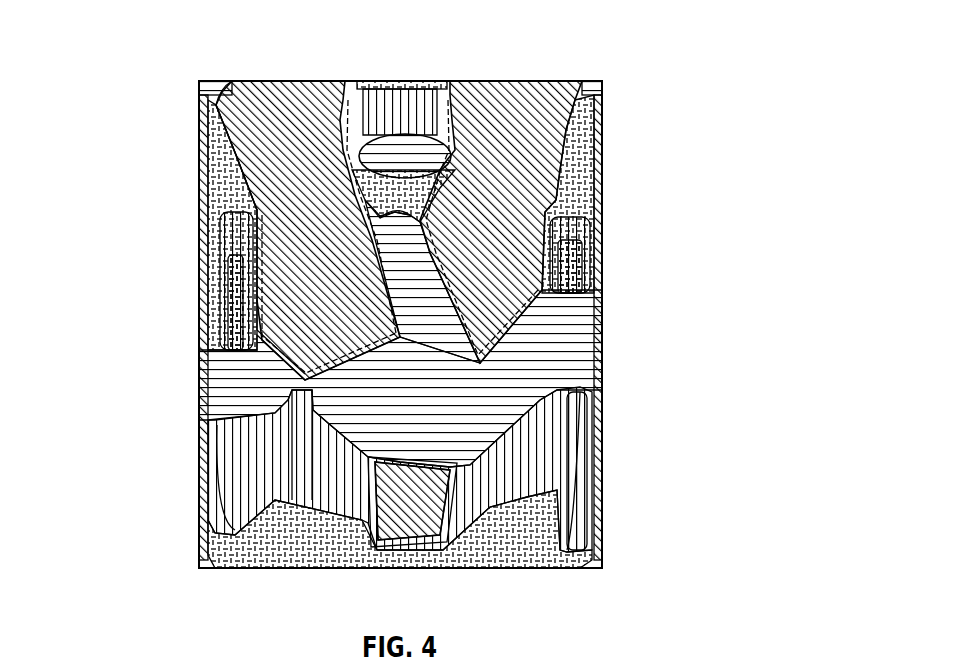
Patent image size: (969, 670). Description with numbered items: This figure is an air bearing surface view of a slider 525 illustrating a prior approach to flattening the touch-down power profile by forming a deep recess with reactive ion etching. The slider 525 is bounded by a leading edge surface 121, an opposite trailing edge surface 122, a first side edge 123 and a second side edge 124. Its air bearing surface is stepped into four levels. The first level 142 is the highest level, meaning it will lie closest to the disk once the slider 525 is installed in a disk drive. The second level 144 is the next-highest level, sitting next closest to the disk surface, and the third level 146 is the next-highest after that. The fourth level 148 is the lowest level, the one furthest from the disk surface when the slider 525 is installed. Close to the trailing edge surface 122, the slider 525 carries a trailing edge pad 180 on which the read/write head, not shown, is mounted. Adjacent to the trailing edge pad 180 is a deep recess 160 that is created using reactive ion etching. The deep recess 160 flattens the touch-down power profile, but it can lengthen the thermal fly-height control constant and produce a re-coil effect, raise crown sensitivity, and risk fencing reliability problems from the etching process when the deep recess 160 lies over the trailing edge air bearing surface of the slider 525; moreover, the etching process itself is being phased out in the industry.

The slider 525 is at (128, 62).
The leading edge surface 121 is at (283, 575).
The trailing edge surface 122 is at (277, 78).
The first side edge 123 is at (196, 245).
The second side edge 124 is at (607, 225).
The first level 142 is at (235, 470).
The second level 144 is at (510, 568).
The third level 146 is at (250, 93).
The fourth level 148 is at (445, 120).
The deep recess 160 is at (400, 160).
The trailing edge pad 180 is at (357, 97).